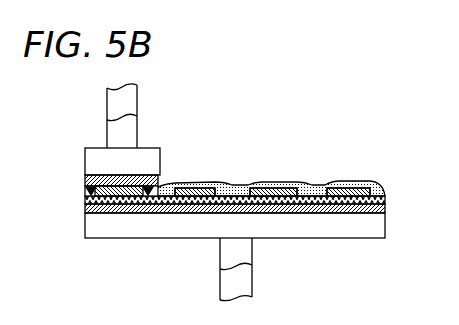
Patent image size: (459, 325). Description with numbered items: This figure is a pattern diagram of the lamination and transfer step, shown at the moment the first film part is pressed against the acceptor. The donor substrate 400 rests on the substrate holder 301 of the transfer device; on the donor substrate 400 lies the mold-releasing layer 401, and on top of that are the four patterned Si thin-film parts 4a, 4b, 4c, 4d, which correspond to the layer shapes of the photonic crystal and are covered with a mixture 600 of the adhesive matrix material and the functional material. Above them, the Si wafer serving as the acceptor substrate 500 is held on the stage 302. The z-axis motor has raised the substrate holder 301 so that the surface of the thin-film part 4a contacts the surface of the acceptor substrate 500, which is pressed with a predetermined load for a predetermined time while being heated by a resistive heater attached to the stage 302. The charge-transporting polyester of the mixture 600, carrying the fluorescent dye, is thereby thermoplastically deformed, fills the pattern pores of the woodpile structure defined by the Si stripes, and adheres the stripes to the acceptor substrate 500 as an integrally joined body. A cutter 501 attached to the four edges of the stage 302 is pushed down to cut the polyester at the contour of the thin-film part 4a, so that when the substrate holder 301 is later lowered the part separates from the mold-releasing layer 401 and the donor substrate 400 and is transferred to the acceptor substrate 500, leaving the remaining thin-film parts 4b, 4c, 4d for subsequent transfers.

The substrate holder 301 is at (385, 226).
The stage 302 is at (83, 158).
The donor substrate 400 is at (385, 208).
The mold-releasing layer 401 is at (385, 199).
The acceptor substrate 500 is at (83, 181).
The cutter 501 is at (85, 191).
The mixture of the adhesive matrix material and the functional material 600 is at (249, 184).
The thin-film part 4a is at (131, 190).
The thin-film part 4b is at (198, 185).
The thin-film part 4c is at (275, 184).
The thin-film part 4d is at (352, 183).